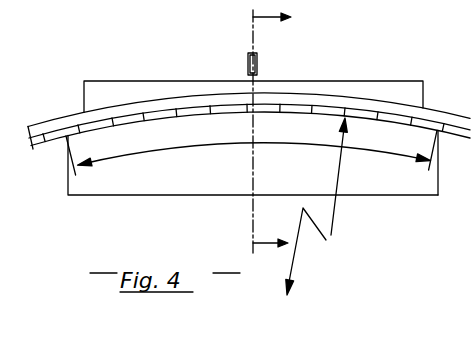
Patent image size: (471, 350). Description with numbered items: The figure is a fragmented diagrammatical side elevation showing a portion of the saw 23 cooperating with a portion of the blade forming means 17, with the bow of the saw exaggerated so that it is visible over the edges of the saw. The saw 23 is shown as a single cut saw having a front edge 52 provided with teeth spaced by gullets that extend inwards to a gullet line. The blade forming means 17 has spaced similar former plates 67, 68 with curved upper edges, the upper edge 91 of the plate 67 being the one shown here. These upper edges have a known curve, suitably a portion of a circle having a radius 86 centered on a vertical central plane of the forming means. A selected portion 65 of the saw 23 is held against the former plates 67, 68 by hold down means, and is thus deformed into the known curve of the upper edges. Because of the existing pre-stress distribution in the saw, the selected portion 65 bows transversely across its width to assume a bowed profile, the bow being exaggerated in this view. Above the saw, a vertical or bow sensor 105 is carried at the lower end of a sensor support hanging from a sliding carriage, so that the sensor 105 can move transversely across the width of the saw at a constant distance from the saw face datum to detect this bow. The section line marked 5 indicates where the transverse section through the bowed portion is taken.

The section line 5- 5 is at (256, 130).
The blade forming means 17 is at (384, 74).
The saw 23 is at (92, 112).
The front edge 52 is at (168, 114).
The selected portion 65 is at (138, 152).
The former plate 67 is at (359, 190).
The former plate 68 is at (426, 177).
The radius 86 is at (332, 233).
The upper edge 91 is at (143, 117).
The bow sensor 105 is at (258, 62).